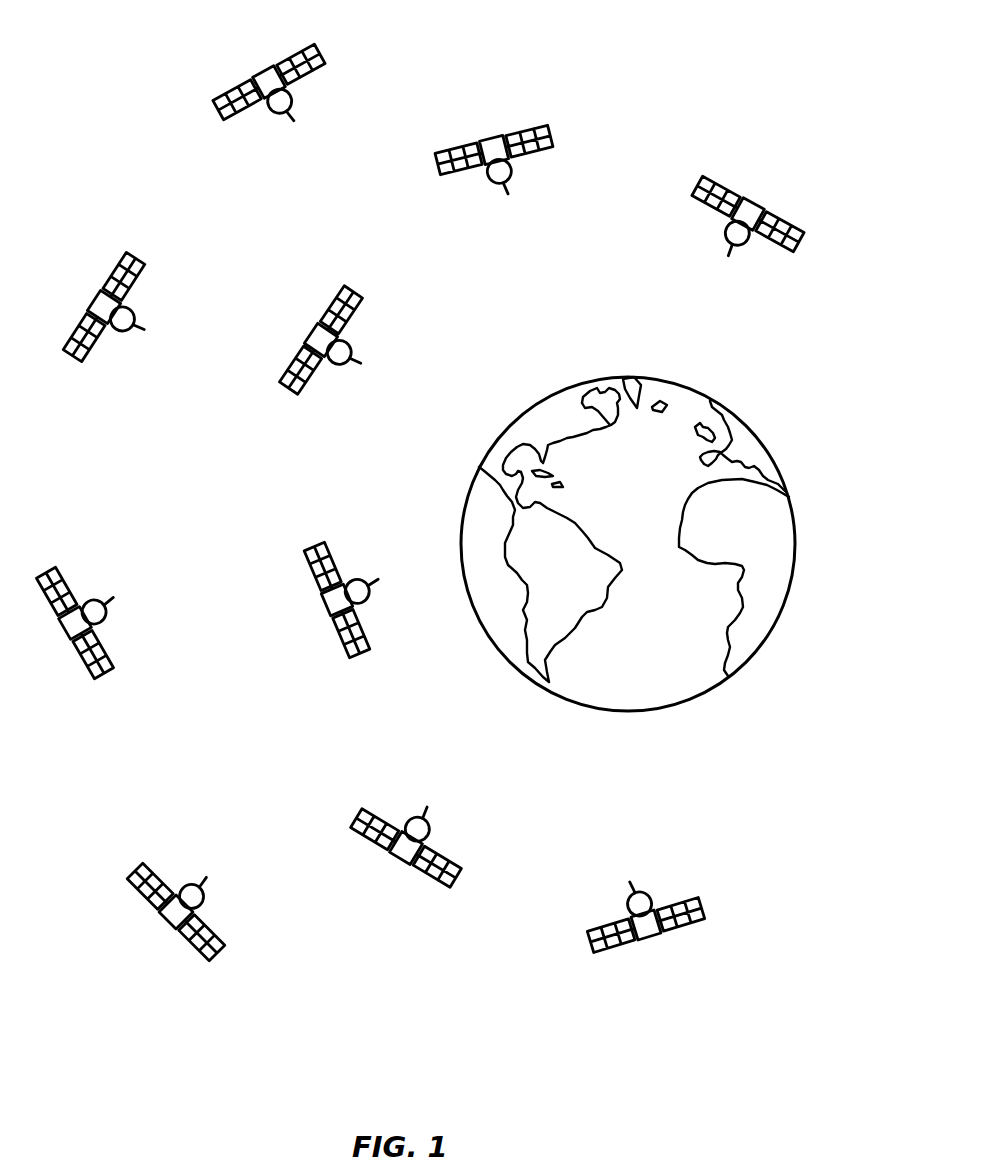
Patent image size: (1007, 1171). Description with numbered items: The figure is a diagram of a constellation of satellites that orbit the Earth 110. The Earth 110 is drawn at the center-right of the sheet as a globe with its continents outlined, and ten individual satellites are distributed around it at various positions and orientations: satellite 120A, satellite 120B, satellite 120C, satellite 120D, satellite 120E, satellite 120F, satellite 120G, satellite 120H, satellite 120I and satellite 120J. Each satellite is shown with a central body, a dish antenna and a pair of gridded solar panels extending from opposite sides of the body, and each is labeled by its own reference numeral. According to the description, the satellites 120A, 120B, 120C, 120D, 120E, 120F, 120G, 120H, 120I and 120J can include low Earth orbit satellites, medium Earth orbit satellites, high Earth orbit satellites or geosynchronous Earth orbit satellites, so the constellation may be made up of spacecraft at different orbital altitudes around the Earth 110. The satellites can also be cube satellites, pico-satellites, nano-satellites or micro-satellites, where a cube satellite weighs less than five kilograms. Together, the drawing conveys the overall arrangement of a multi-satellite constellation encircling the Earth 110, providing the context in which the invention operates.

The Earth 110 is at (765, 443).
The satellite 120A is at (780, 220).
The satellite 120B is at (533, 125).
The satellite 120C is at (352, 290).
The satellite 120D is at (337, 550).
The satellite 120E is at (452, 848).
The satellite 120F is at (703, 903).
The satellite 120G is at (327, 55).
The satellite 120H is at (138, 258).
The satellite 120I is at (70, 578).
The satellite 120J is at (220, 925).